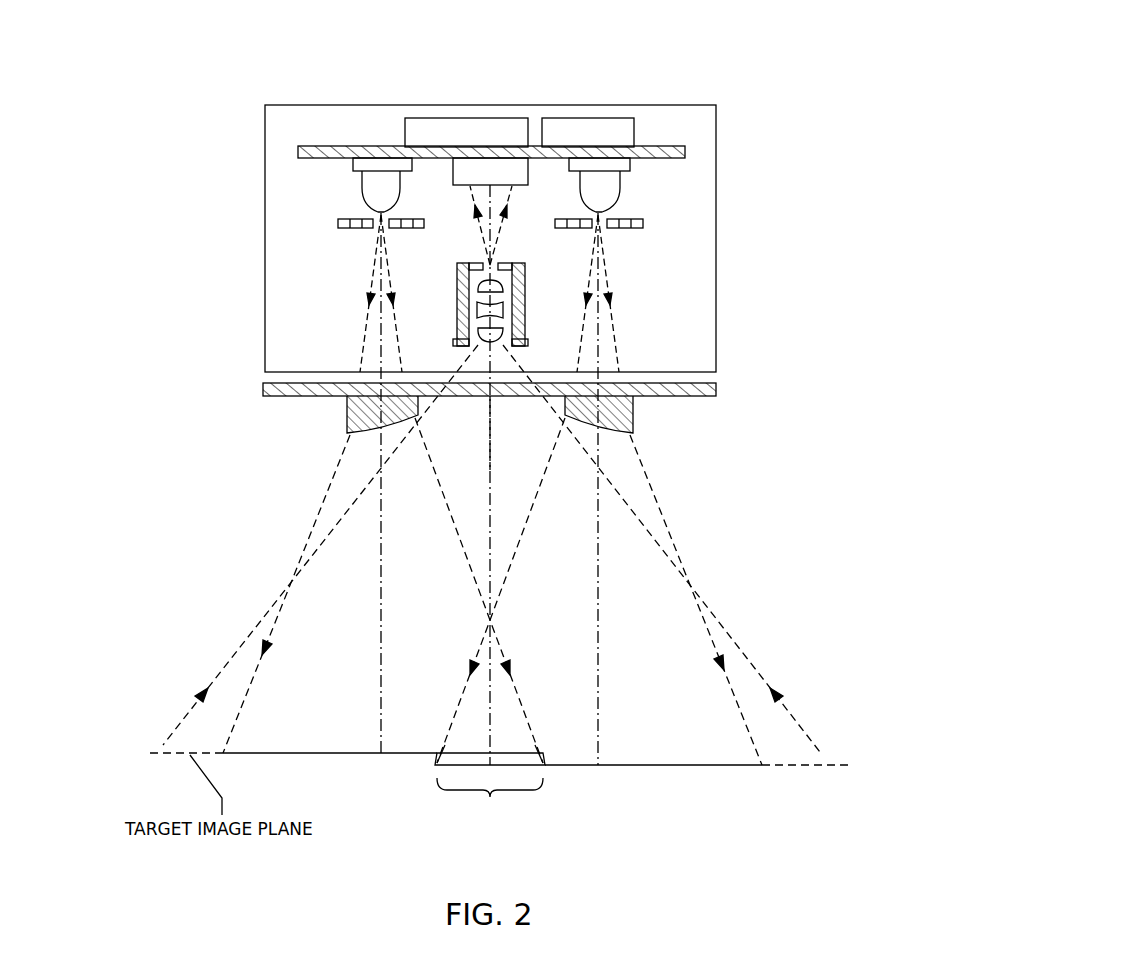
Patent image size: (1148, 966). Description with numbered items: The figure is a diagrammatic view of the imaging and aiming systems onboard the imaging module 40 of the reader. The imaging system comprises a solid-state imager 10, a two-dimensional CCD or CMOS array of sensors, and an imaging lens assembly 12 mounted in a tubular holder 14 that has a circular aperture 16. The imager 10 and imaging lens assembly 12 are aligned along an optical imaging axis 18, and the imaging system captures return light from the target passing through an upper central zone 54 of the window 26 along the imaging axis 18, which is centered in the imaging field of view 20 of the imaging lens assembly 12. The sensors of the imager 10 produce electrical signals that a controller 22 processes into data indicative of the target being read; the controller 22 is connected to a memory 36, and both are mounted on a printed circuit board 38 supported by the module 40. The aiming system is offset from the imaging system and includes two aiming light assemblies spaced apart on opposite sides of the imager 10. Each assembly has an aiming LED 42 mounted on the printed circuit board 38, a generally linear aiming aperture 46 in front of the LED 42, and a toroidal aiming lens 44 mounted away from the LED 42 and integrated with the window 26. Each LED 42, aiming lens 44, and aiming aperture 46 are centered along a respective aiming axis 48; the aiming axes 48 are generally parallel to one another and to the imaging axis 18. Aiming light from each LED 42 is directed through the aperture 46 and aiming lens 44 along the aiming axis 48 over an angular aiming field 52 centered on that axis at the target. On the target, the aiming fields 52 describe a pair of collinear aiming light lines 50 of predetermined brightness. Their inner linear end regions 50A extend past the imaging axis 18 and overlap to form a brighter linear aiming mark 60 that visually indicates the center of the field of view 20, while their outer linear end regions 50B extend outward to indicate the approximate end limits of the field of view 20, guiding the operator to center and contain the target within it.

The imaging module 40 is at (712, 50).
The printed circuit board 38 is at (690, 146).
The controller 22 is at (405, 134).
The memory 36 is at (634, 134).
The solid-state imager 10 is at (453, 172).
The aiming LED 42 is at (757, 143).
The aiming aperture 46 is at (798, 286).
The imaging lens assembly 12 is at (640, 266).
The tubular holder 14 is at (458, 280).
The circular aperture 16 is at (455, 340).
The window 26 is at (265, 389).
The aiming lens 44 is at (648, 422).
The imaging axis 18 is at (488, 447).
The upper central zone 54 is at (493, 456).
The aiming axis 48 is at (381, 570).
The imaging field of view 20 is at (262, 620).
The aiming field 52 is at (672, 502).
The aiming light line 50 is at (672, 764).
The inner linear end region 50A is at (460, 753).
The outer linear end region 50B is at (335, 756).
The aiming mark 60 is at (487, 801).